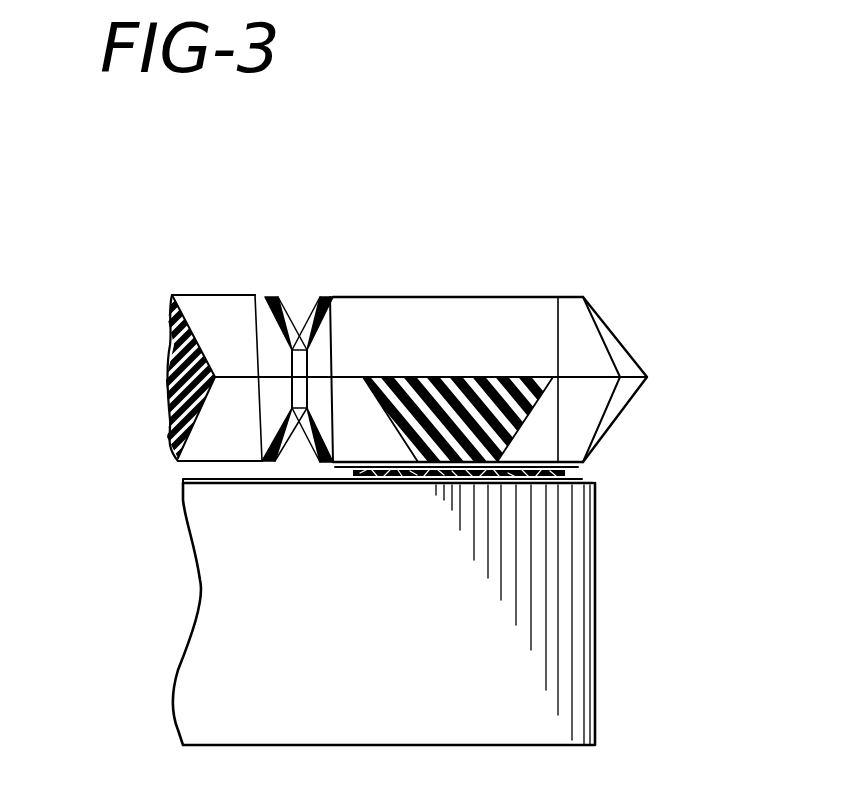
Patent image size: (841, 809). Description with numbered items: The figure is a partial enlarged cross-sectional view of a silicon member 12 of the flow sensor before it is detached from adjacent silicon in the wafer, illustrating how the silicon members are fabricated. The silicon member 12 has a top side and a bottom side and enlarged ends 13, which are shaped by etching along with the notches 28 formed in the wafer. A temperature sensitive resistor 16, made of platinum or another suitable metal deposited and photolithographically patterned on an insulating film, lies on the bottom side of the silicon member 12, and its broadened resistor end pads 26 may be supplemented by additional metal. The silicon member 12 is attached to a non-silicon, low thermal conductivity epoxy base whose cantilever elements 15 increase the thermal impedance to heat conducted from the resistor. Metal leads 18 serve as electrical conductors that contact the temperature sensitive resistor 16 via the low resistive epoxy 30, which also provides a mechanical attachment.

The silicon member 12 is at (473, 296).
The enlarged ends 13 is at (623, 342).
The cantilever elements 15 is at (596, 683).
The temperature sensitive resistor 16 is at (460, 483).
The metal leads 18 is at (193, 477).
The resistor end pads 26 is at (540, 481).
The notches 28 is at (278, 300).
The low resistive epoxy 30 is at (578, 470).